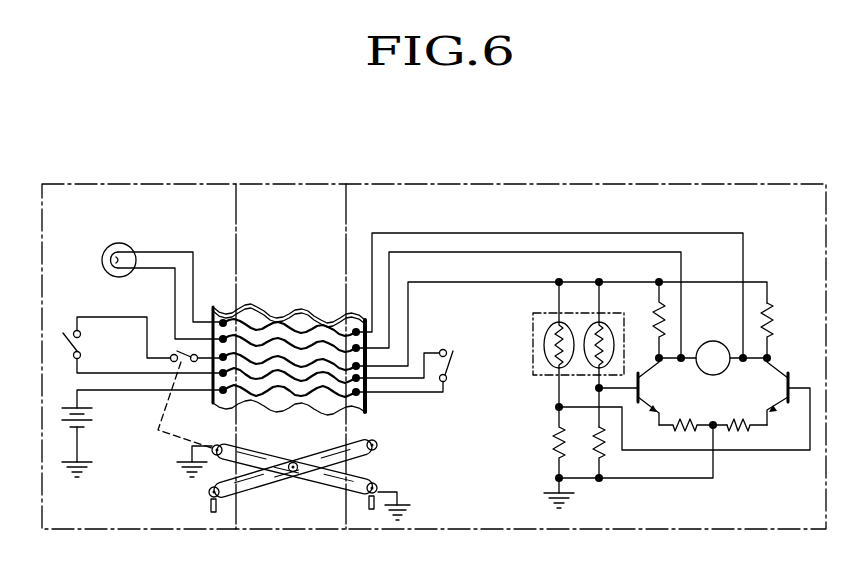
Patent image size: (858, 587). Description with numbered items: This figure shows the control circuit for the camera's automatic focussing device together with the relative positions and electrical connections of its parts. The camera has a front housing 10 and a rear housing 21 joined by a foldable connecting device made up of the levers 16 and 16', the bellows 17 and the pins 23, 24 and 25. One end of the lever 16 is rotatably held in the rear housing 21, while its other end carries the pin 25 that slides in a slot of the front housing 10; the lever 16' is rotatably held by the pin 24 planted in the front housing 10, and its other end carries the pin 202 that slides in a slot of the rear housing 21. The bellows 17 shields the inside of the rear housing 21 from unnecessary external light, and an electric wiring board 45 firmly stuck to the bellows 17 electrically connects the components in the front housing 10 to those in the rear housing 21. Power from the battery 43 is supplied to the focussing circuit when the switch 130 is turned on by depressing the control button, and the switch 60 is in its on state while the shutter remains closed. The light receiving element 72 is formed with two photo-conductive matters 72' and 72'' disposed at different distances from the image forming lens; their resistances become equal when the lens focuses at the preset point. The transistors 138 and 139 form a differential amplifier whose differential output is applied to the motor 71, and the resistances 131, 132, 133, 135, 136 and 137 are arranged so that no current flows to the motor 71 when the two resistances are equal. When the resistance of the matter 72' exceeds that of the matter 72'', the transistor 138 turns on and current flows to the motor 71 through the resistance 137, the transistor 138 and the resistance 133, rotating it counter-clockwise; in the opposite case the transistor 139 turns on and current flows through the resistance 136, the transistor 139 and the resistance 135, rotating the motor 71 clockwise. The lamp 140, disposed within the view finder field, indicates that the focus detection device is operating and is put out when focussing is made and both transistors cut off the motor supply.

The front housing 10 is at (638, 513).
The lever 16 is at (292, 483).
The lever 16' is at (294, 486).
The bellows 17 is at (278, 513).
The rear housing 21 is at (87, 513).
The pin 23 is at (293, 462).
The pin 24 is at (373, 440).
The pin 25 is at (363, 498).
The battery 43 is at (93, 417).
The electric wiring board 45 is at (282, 310).
The switch 60 is at (453, 351).
The motor 71 is at (717, 377).
The light receiving element 72 is at (557, 346).
The photo-conductive matter 72' is at (532, 344).
The photo-conductive matter 72'' is at (618, 354).
The switch 130 is at (63, 332).
The resistance 131 is at (552, 440).
The resistance 132 is at (595, 457).
The resistance 133 is at (687, 430).
The resistance 135 is at (740, 430).
The resistance 136 is at (667, 320).
The resistance 137 is at (770, 320).
The transistor 138 is at (648, 388).
The transistor 139 is at (782, 373).
The lamp 140 is at (118, 242).
The pin 202 is at (207, 497).